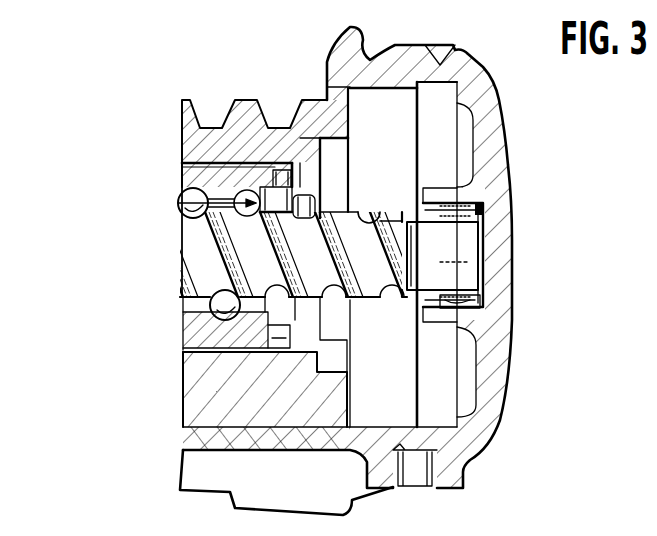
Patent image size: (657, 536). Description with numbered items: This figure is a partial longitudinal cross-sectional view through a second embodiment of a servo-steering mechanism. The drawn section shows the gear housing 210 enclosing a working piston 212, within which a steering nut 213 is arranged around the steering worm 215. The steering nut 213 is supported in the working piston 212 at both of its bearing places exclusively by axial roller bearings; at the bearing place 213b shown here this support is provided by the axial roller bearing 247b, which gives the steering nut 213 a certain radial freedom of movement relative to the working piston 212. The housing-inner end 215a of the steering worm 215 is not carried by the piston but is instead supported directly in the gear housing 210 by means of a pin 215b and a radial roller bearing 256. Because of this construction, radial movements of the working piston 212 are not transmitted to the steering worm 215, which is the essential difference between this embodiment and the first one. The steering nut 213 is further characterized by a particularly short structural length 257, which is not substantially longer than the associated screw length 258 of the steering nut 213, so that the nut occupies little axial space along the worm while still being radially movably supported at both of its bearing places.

The gear housing 210 is at (490, 390).
The working piston 212 is at (350, 401).
The steering nut 213 is at (183, 178).
The bearing place 213b is at (322, 185).
The steering worm 215 is at (342, 204).
The housing-inner end 215a is at (378, 249).
The pin 215b is at (470, 266).
The axial roller bearing 247b is at (288, 338).
The radial roller bearing 256 is at (476, 311).
The structural length 257 is at (220, 165).
The screw length 258 is at (181, 227).